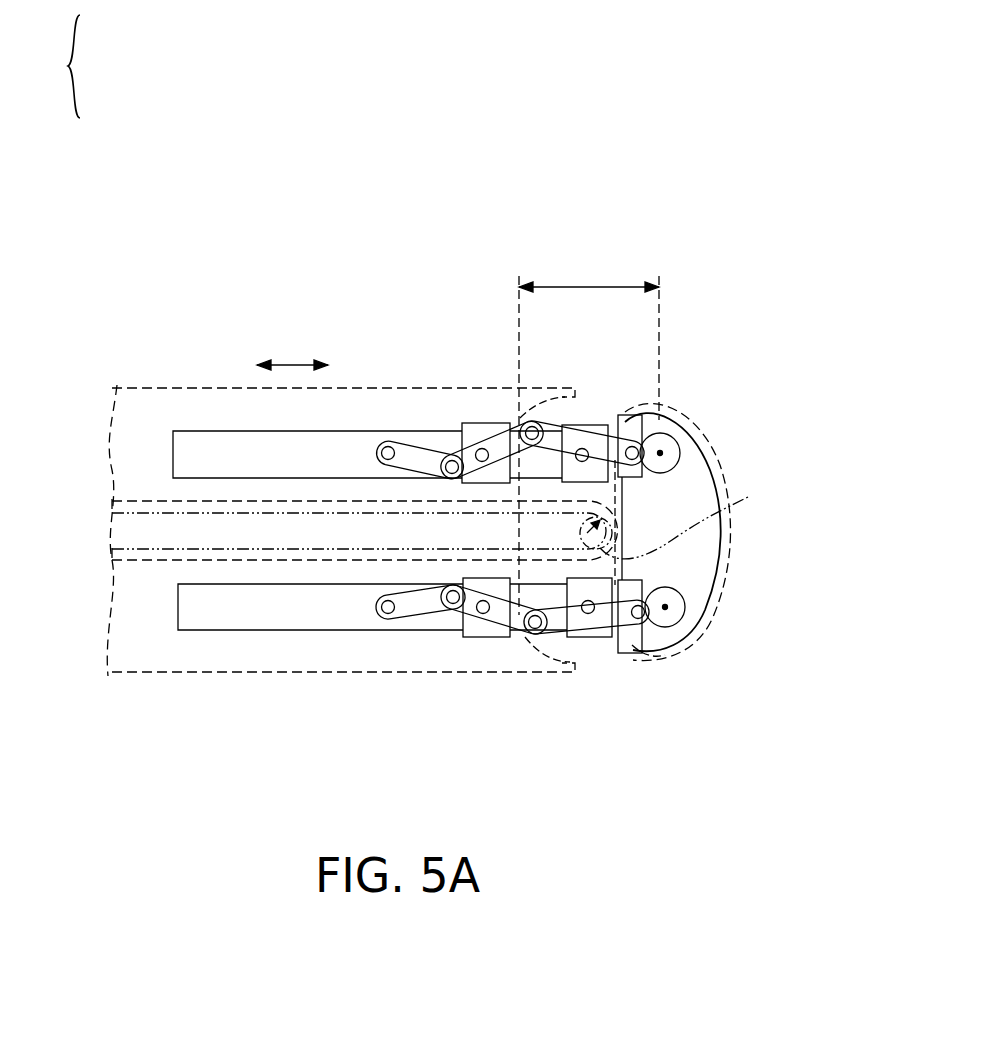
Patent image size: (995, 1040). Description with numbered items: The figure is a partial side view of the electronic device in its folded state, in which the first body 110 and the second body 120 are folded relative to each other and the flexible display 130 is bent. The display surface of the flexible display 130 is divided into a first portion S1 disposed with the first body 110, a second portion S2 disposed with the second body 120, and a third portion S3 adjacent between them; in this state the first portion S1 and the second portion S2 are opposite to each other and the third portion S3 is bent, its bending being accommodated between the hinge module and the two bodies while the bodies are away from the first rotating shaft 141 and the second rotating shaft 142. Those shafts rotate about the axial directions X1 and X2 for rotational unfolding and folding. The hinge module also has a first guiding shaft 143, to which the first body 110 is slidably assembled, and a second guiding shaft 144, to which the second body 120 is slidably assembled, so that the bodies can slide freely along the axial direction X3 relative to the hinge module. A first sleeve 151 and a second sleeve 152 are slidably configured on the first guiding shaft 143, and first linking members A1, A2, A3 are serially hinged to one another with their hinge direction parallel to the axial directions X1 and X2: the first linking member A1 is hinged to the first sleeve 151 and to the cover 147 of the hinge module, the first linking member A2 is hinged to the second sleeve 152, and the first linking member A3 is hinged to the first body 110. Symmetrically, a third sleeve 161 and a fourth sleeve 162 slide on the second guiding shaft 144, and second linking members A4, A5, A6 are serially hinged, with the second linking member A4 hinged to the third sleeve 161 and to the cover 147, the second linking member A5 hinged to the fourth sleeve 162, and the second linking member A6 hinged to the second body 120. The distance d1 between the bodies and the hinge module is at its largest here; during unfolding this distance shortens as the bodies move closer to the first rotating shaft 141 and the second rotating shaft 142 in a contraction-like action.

The first body 110 is at (117, 433).
The second body 120 is at (117, 603).
The flexible display 130 is at (318, 282).
The first rotating shaft 141 is at (667, 437).
The second rotating shaft 142 is at (670, 623).
The first guiding shaft 143 is at (215, 445).
The second guiding shaft 144 is at (215, 618).
The cover 147 is at (732, 552).
The first sleeve 151 is at (597, 425).
The second sleeve 152 is at (473, 423).
The third sleeve 161 is at (602, 637).
The fourth sleeve 162 is at (477, 637).
The first linking member A1 is at (550, 445).
The first linking member A2 is at (500, 442).
The first linking member A3 is at (410, 457).
The second linking member A4 is at (558, 615).
The second linking member A5 is at (502, 618).
The second linking member A6 is at (410, 607).
The first portion S1 is at (168, 514).
The second portion S2 is at (60, 550).
The third portion S3 is at (435, 323).
The axial direction X1 is at (668, 452).
The axial direction X2 is at (673, 607).
The axial direction X3 is at (292, 345).
The distance d1 is at (589, 432).